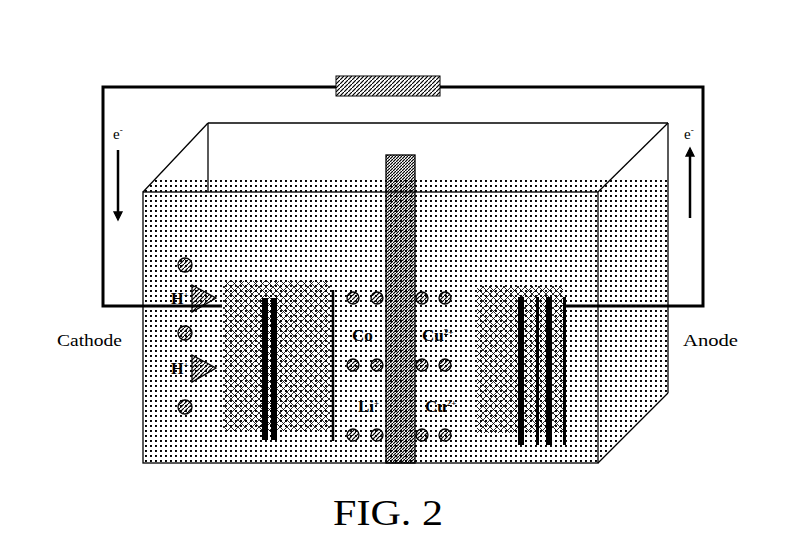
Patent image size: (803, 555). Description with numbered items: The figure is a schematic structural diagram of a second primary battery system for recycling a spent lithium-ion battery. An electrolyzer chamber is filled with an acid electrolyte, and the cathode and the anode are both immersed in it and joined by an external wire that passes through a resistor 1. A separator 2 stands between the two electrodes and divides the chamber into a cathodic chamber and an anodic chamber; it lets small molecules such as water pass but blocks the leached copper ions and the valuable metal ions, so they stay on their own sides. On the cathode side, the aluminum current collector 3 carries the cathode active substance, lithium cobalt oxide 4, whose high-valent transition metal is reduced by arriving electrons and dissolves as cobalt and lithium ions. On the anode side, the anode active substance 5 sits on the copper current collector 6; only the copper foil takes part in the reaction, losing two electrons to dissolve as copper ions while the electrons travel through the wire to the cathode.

The resistor 1 is at (388, 77).
The separator 2 is at (380, 176).
The Al current collector 3 is at (268, 300).
The LiCoO2 cathode active material 4 is at (292, 300).
The anode active substance 5 is at (526, 296).
The Cu current collector 6 is at (549, 296).